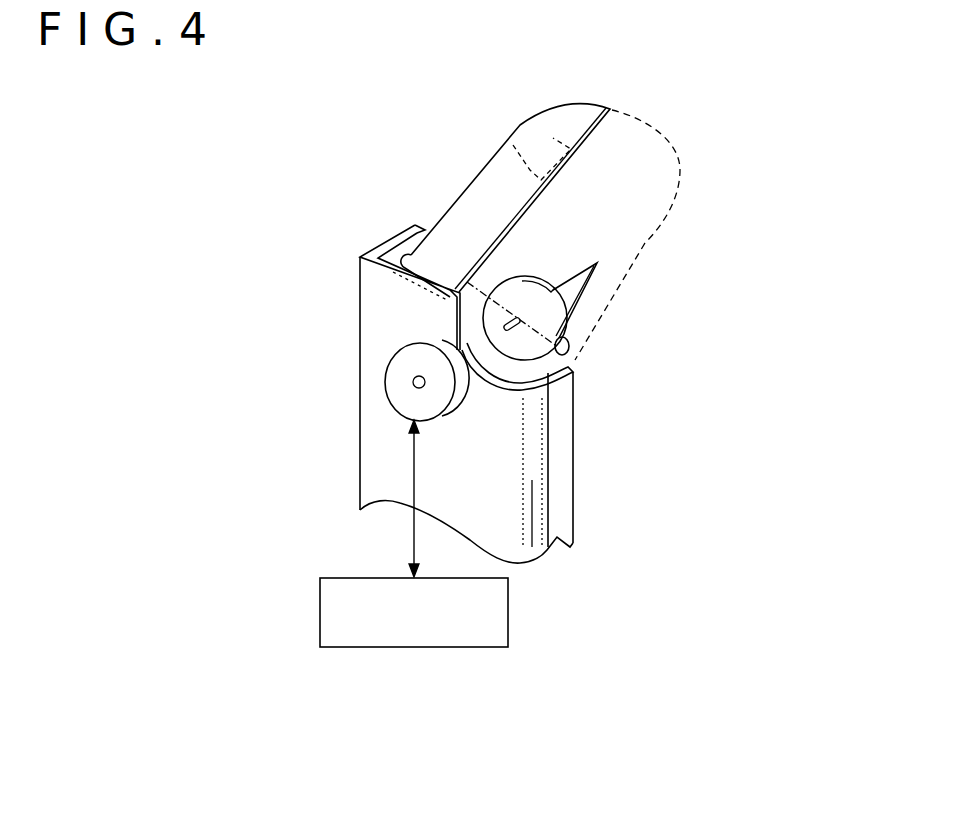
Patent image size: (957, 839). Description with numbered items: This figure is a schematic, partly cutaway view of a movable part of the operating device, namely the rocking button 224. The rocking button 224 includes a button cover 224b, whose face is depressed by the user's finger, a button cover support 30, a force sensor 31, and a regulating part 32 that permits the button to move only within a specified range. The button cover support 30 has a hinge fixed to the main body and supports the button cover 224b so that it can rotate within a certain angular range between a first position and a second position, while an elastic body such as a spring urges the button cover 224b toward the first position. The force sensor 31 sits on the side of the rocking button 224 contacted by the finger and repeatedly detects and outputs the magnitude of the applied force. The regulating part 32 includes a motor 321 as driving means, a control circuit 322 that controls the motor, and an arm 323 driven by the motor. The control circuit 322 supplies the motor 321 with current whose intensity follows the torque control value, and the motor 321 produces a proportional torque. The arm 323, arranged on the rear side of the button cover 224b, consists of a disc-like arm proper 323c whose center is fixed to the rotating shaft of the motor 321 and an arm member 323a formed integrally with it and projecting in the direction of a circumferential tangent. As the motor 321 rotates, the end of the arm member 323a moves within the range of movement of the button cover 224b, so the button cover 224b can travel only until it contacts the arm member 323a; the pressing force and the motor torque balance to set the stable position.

The rocking button 224 is at (139, 674).
The button cover 224b is at (553, 125).
The button cover support 30 is at (410, 250).
The force sensor 31 is at (513, 145).
The regulating part 32 is at (557, 253).
The motor 321 is at (393, 380).
The control circuit 322 is at (508, 606).
The arm 323 is at (730, 238).
The arm member 323a is at (618, 273).
The disc-like arm proper 323c is at (593, 302).